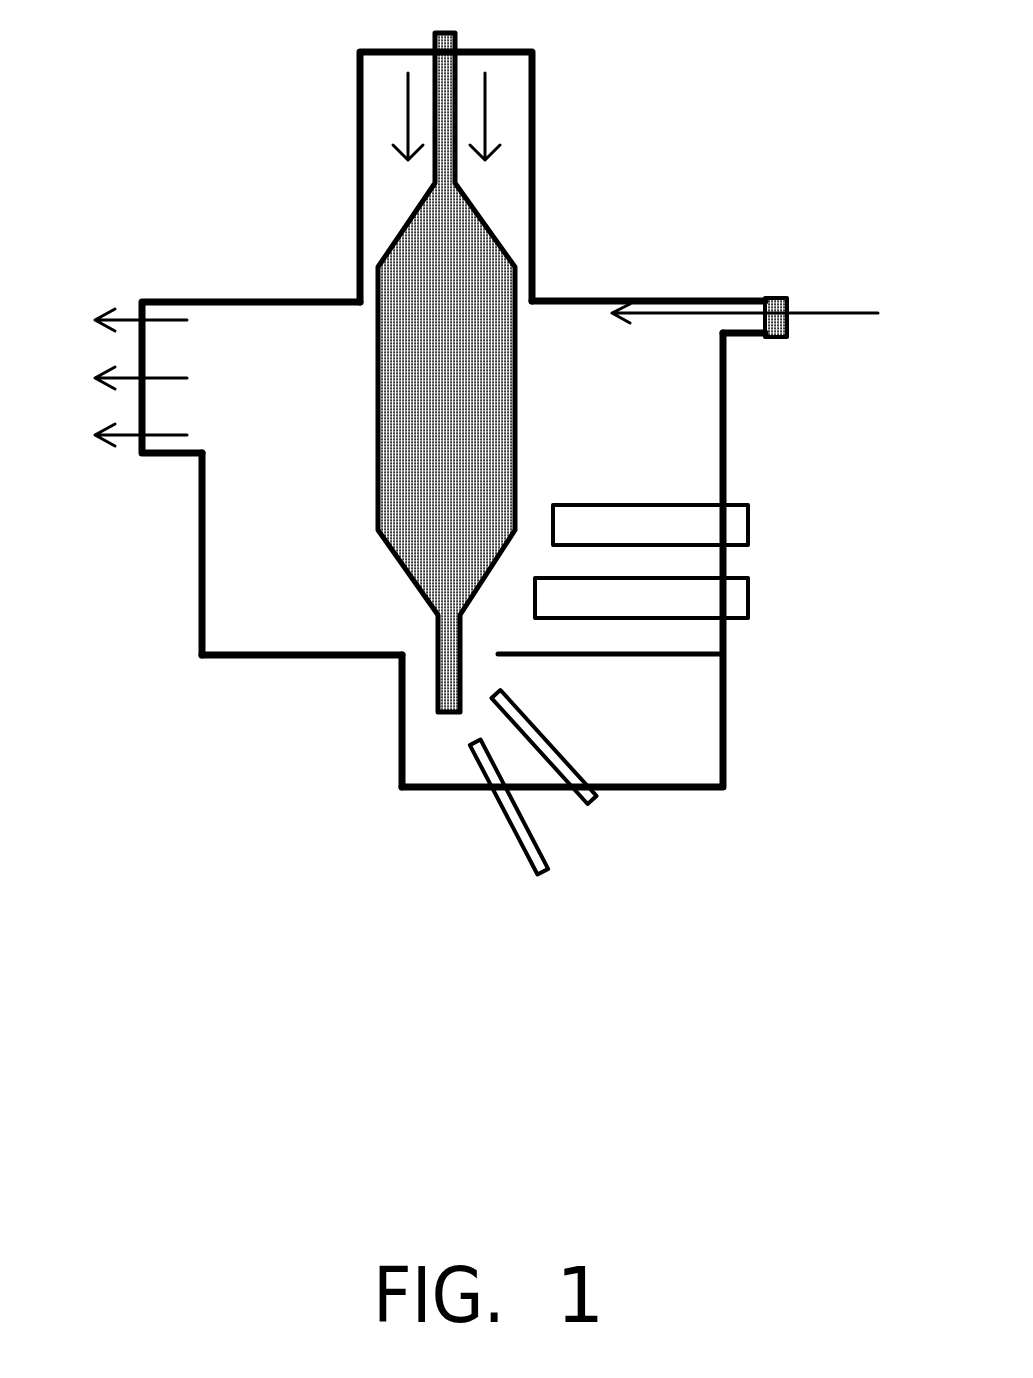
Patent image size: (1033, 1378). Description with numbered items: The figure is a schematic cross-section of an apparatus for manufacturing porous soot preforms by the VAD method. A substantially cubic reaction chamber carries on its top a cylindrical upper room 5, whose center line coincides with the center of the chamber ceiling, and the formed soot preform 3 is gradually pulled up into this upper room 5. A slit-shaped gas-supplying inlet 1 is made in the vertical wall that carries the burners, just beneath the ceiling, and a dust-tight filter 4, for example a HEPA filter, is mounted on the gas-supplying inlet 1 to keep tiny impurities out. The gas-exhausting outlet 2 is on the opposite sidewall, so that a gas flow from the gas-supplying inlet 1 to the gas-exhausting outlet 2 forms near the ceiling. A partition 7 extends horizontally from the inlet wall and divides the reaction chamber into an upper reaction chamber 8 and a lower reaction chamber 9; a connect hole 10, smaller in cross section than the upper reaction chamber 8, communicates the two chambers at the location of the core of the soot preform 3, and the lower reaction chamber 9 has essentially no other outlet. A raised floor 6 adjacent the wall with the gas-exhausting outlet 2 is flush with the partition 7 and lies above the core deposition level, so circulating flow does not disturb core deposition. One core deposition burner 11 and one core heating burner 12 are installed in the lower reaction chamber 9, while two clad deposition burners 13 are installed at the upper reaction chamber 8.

The gas-supplying inlet 1 is at (793, 297).
The gas-exhausting outlet 2 is at (140, 305).
The soot preform 3 is at (463, 225).
The dust-tight filter 4 is at (770, 297).
The upper room 5 is at (387, 193).
The raised floor 6 is at (293, 660).
The partition 7 is at (665, 655).
The upper reaction chamber 8 is at (243, 518).
The lower reaction chamber 9 is at (698, 748).
The connect hole 10 is at (418, 655).
The core deposition burner 11 is at (497, 813).
The core heating burner 12 is at (593, 808).
The clad deposition burners 13 is at (748, 527).